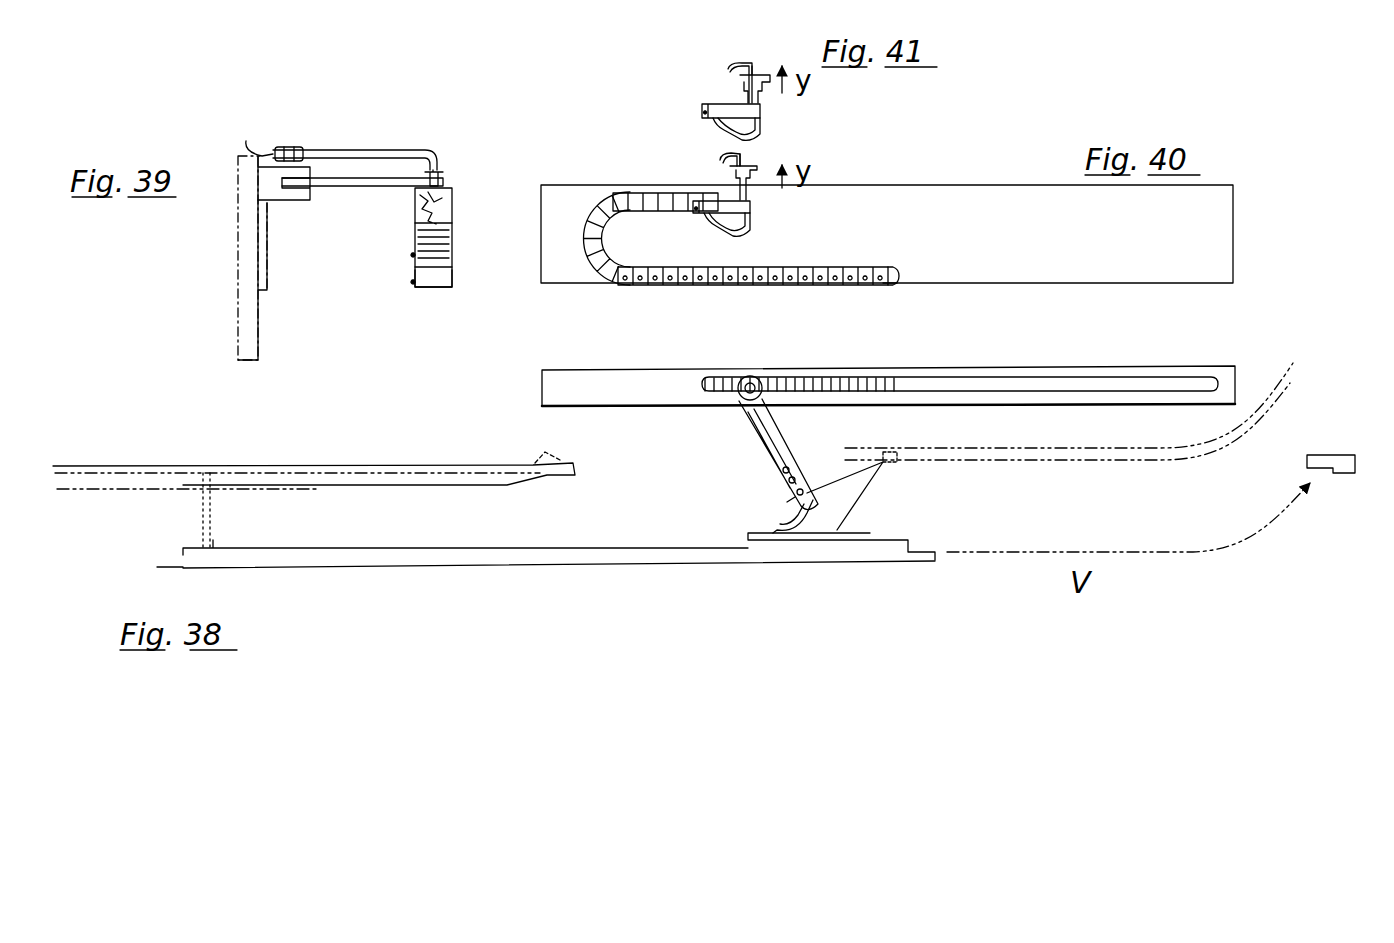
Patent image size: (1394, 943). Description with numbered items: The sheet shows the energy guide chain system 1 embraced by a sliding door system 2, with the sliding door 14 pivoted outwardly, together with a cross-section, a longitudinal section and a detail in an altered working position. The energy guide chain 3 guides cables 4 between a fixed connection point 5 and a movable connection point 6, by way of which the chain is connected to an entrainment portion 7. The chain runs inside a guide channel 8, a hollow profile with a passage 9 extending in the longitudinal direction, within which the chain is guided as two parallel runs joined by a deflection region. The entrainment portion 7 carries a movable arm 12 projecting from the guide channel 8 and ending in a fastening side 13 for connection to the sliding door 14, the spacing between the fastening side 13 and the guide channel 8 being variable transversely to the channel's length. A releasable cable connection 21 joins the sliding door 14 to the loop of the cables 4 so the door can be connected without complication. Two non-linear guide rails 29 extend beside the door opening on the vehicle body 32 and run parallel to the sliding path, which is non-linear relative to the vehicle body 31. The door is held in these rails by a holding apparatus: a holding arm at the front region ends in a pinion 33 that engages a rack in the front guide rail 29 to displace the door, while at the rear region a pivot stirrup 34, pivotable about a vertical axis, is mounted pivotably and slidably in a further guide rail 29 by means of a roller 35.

In FIG. 41, the energy guide chain system 1 is at (775, 48).
In FIG. 40, the energy guide chain system 1 is at (1264, 126).
In FIG. 38, the energy guide chain system 1 is at (1247, 330).
In FIG. 38, the sliding door system 2 is at (1290, 318).
In FIG. 39, the energy guide chain 3 is at (417, 247).
In FIG. 40, the energy guide chain 3 is at (830, 267).
In FIG. 38, the energy guide chain 3 is at (815, 387).
In FIG. 39, the cables 4 is at (353, 152).
In FIG. 38, the cables 4 is at (760, 422).
In FIG. 40, the fixed connection point 5 is at (884, 281).
In FIG. 40, the movable connection point 6 is at (764, 203).
In FIG. 40, the entrainment portion 7 is at (715, 172).
In FIG. 38, the entrainment portion 7 is at (761, 462).
In FIG. 39, the guide channel 8 is at (418, 287).
In FIG. 40, the guide channel 8 is at (977, 183).
In FIG. 38, the guide channel 8 is at (540, 407).
In FIG. 38, the passage 9 is at (973, 387).
In FIG. 39, the movable arm 12 is at (360, 183).
In FIG. 38, the movable arm 12 is at (743, 425).
In FIG. 38, the fastening side 13 is at (783, 503).
In FIG. 39, the sliding door 14 is at (243, 250).
In FIG. 38, the sliding door 14 is at (480, 555).
In FIG. 39, the releasable cable connection 21 is at (283, 152).
In FIG. 38, the guide rails 29 is at (253, 478).
In FIG. 38, the vehicle body 31 is at (543, 478).
In FIG. 38, the vehicle body 32 is at (857, 502).
In FIG. 38, the pinion 33 is at (897, 462).
In FIG. 38, the pivot stirrup 34 is at (203, 512).
In FIG. 38, the roller 35 is at (203, 477).